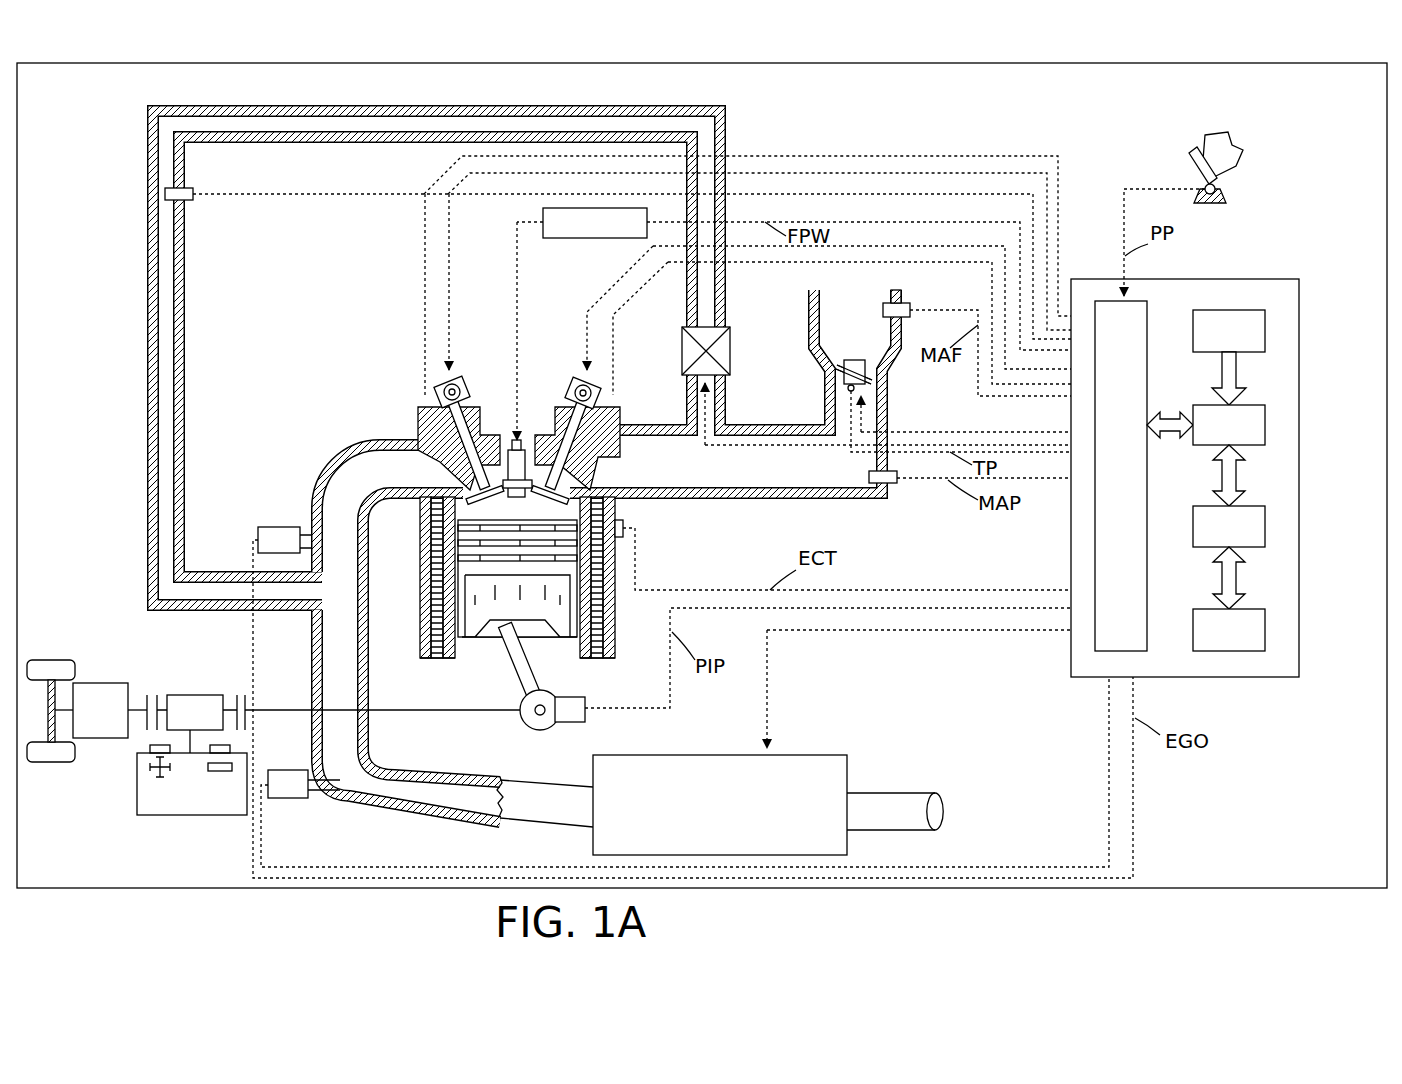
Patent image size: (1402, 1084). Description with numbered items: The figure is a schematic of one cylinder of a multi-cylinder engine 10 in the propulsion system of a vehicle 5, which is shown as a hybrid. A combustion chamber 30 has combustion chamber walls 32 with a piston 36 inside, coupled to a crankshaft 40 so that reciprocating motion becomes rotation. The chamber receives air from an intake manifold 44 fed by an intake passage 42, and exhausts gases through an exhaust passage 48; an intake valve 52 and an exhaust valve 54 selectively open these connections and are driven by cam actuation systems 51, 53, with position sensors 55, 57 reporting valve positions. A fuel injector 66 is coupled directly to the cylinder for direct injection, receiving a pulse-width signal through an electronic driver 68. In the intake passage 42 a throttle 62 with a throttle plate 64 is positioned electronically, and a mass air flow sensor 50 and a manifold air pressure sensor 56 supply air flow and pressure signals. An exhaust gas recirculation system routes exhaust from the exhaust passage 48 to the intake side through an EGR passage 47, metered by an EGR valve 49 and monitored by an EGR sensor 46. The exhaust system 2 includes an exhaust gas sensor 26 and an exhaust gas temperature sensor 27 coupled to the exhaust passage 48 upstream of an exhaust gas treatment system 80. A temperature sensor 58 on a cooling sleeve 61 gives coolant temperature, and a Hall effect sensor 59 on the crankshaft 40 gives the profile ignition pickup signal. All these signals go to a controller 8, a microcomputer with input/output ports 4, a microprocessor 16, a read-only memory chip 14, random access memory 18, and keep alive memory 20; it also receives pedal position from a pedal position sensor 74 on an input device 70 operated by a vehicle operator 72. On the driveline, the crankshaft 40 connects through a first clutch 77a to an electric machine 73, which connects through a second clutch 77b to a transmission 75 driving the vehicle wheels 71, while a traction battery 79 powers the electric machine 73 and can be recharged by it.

The vehicle 5 is at (47, 108).
The EGR passage 47 is at (430, 106).
The EGR sensor 46 is at (185, 200).
The engine 10 is at (352, 360).
The cam actuation system 53 is at (455, 375).
The cam actuation system 51 is at (585, 378).
The position sensor 57 is at (438, 393).
The exhaust valve 54 is at (420, 440).
The fuel injector 66 is at (515, 445).
The position sensor 55 is at (598, 398).
The intake valve 52 is at (575, 470).
The exhaust passage 48 is at (397, 481).
The exhaust gas sensor 26 is at (280, 527).
The combustion chamber 30 is at (435, 600).
The combustion chamber walls 32 is at (455, 655).
The piston 36 is at (500, 610).
The crankshaft 40 is at (527, 725).
The Hall effect sensor 59 is at (565, 722).
The cooling sleeve 61 is at (605, 605).
The temperature sensor 58 is at (630, 535).
The exhaust gas temperature sensor 27 is at (285, 770).
The vehicle wheels 71 is at (52, 660).
The second clutch 77b is at (150, 695).
The first clutch 77a is at (239, 695).
The transmission 75 is at (114, 721).
The electric machine 73 is at (208, 721).
The traction battery 79 is at (200, 815).
The exhaust gas treatment system 80 is at (732, 815).
The exhaust system 2 is at (852, 700).
The electronic driver 68 is at (620, 238).
The EGR valve 49 is at (732, 350).
The intake passage 42 is at (863, 334).
The mass air flow sensor 50 is at (905, 303).
The throttle plate 64 is at (836, 370).
The throttle 62 is at (870, 372).
The intake manifold 44 is at (799, 471).
The manifold air pressure sensor 56 is at (895, 486).
The input device 70 is at (1190, 165).
The vehicle operator 72 is at (1245, 155).
The pedal position sensor 74 is at (1222, 190).
The input/output ports 4 is at (1148, 308).
The controller 8 is at (1300, 282).
The read-only memory chip 14 is at (1266, 330).
The microprocessor 16 is at (1266, 428).
The random access memory 18 is at (1266, 528).
The keep alive memory 20 is at (1266, 630).